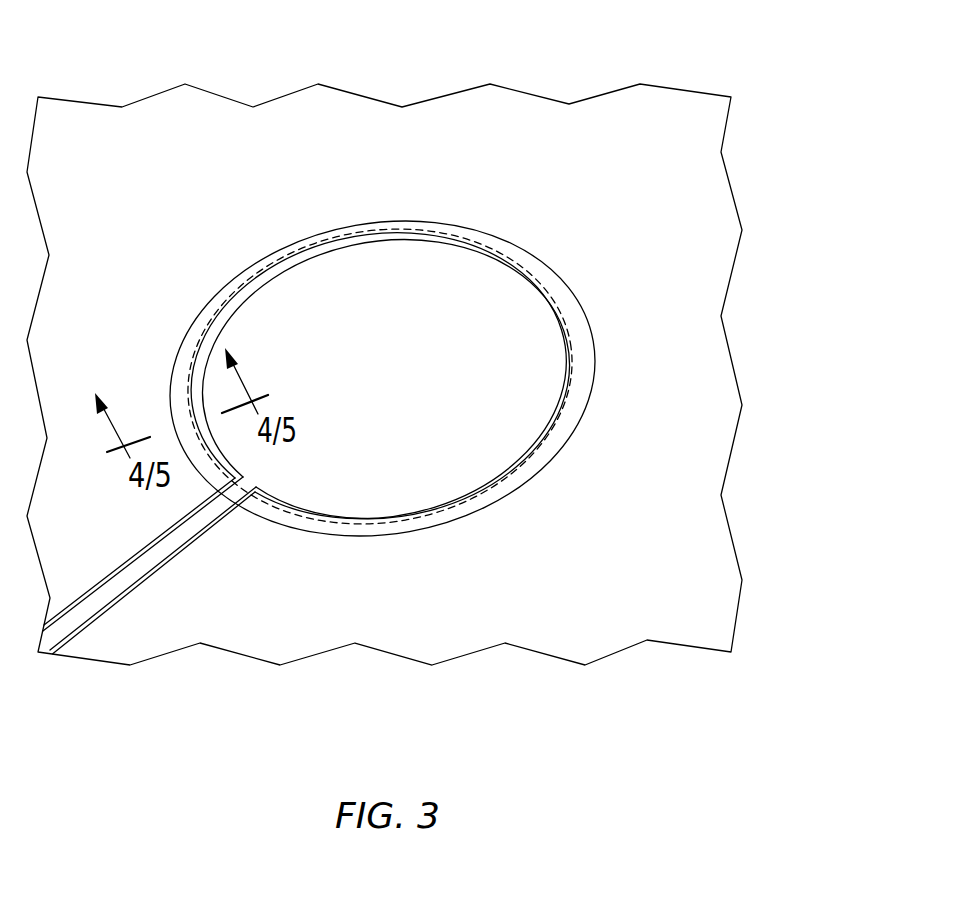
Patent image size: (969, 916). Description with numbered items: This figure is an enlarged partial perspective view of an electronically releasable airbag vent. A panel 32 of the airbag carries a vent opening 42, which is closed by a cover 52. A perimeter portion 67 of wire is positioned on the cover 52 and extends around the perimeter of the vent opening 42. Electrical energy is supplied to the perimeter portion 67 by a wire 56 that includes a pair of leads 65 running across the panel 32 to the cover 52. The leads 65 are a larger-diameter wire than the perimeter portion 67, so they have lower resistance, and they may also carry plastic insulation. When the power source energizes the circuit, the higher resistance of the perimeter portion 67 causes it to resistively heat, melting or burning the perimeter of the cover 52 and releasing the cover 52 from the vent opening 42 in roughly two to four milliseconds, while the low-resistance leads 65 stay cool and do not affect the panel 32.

The panel 32 is at (528, 118).
The vent opening 42 is at (320, 290).
The cover 52 is at (555, 283).
The wire 56 is at (193, 552).
The leads 65 is at (130, 562).
The perimeter portion 67 is at (366, 517).